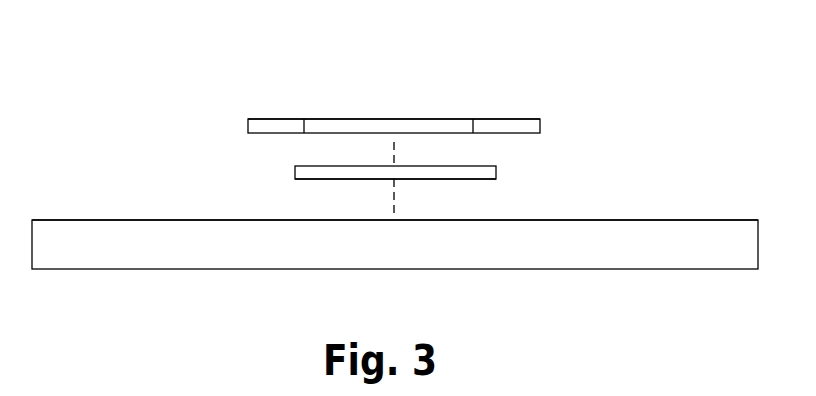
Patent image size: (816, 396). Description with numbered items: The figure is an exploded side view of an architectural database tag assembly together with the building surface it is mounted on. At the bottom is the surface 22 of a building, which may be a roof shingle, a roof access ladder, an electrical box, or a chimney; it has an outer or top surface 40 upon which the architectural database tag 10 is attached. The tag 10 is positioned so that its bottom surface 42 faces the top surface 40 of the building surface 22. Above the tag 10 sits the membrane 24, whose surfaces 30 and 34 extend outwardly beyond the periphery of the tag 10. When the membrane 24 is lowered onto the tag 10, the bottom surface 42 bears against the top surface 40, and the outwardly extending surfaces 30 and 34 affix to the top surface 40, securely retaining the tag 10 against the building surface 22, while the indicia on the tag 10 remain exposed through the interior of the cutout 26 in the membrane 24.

The architectural database tag 10 is at (482, 166).
The surface of a building 22 is at (710, 232).
The membrane 24 is at (527, 118).
The cutout 26 is at (332, 121).
The surface of the membrane 30 is at (270, 128).
The surface of the membrane 34 is at (482, 122).
The outer surface 40 is at (625, 220).
The bottom surface 42 is at (408, 179).